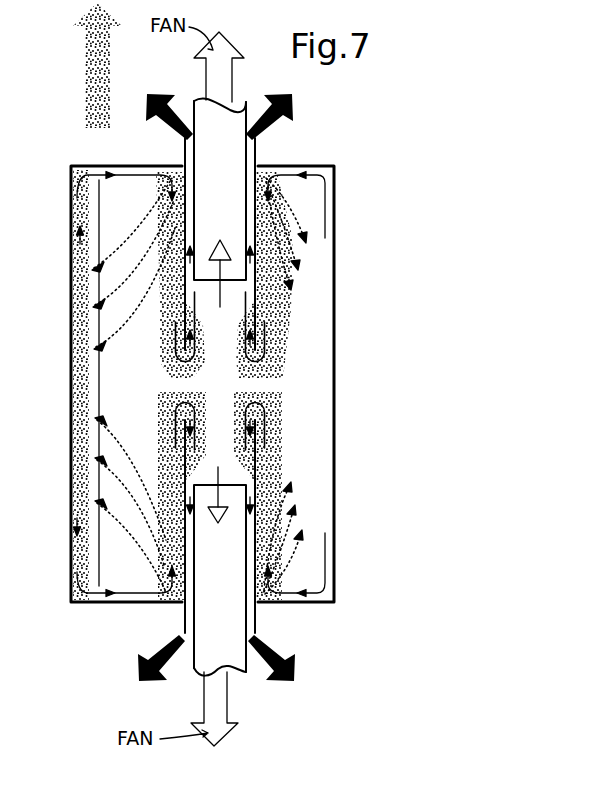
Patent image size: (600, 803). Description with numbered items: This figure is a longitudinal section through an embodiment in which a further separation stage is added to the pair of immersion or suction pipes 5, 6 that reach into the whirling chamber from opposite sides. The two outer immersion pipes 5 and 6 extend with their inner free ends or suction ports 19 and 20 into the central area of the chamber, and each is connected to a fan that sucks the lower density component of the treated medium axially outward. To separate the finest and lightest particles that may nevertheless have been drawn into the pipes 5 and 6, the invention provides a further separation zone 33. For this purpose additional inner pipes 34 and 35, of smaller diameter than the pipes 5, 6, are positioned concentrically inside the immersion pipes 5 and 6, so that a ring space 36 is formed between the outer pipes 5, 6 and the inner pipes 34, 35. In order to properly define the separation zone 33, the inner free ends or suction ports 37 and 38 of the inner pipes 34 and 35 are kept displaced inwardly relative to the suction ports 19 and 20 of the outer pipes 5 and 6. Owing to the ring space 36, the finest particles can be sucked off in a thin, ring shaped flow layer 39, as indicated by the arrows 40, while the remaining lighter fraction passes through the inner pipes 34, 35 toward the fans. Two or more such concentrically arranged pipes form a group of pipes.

The immersion pipe 5 is at (182, 312).
The immersion pipe 6 is at (182, 464).
The suction port 19 is at (226, 356).
The suction port 20 is at (212, 414).
The separation zone 33 is at (247, 320).
The inner pipe 34 is at (194, 157).
The inner pipe 35 is at (189, 598).
The ring space 36 is at (253, 217).
The suction port 37 is at (203, 279).
The suction port 38 is at (232, 487).
The ring shaped flow layer 39 is at (254, 295).
The arrows 40 is at (293, 105).